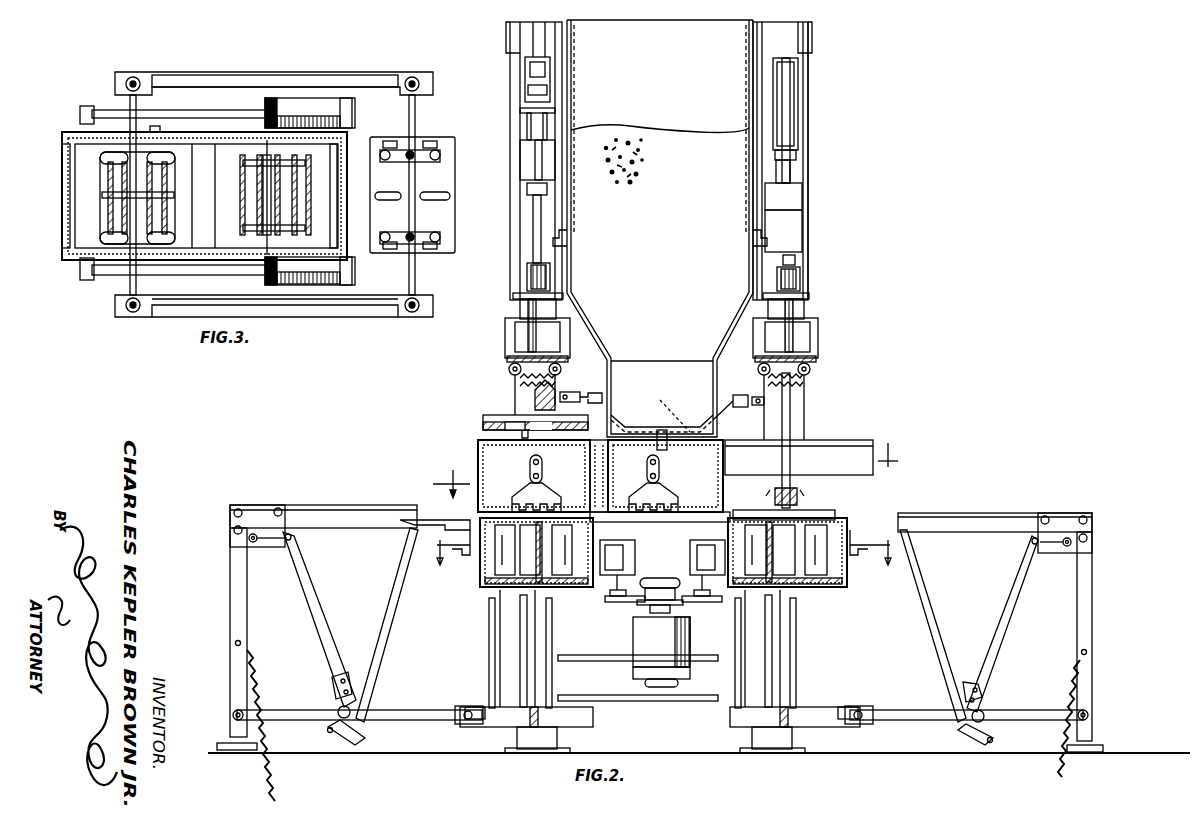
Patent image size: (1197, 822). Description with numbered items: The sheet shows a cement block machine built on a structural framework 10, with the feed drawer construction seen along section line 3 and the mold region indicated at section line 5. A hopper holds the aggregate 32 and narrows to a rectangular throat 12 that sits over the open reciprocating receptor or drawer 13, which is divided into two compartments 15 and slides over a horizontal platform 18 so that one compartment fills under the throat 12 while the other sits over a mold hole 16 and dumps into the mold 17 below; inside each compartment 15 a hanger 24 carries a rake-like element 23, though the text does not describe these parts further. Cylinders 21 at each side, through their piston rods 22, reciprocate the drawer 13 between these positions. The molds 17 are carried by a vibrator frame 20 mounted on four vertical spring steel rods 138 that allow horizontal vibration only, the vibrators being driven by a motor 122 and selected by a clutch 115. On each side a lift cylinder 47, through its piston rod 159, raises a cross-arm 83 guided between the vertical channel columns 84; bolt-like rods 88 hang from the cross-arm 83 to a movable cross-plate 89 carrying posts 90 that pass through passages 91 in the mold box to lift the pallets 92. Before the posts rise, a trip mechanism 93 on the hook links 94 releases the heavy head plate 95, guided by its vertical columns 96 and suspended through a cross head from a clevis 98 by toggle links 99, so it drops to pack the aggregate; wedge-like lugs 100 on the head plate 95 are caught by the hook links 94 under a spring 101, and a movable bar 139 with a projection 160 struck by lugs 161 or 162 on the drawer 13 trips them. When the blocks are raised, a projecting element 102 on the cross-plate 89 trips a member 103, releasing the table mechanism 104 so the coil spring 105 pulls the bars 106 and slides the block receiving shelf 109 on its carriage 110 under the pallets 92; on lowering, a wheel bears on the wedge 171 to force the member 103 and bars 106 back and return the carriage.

In FIG. 2, the section line 3- 3 is at (663, 461).
In FIG. 2, the section line 5- 5 is at (652, 584).
In FIG. 3, the framework 10 is at (152, 72).
In FIG. 2, the framework 10 is at (520, 152).
In FIG. 2, the rectangular throat 12 is at (590, 402).
In FIG. 3, the receptor or drawer 13 is at (256, 140).
In FIG. 3, the compartments 15 is at (118, 140).
In FIG. 2, the compartments 15 is at (600, 476).
In FIG. 2, the mold hole 16 is at (452, 520).
In FIG. 3, the mold 17 is at (110, 245).
In FIG. 2, the mold 17 is at (490, 565).
In FIG. 2, the platform 18 is at (836, 517).
In FIG. 2, the vibrator frame 20 is at (664, 550).
In FIG. 3, the cylinders 21 is at (352, 108).
In FIG. 3, the piston rods 22 is at (222, 115).
In FIG. 2, the rake 23 is at (522, 492).
In FIG. 2, the hanger 24 is at (530, 463).
In FIG. 2, the aggregate 32 is at (629, 195).
In FIG. 2, the lift cylinders 47 is at (536, 305).
In FIG. 2, the cross-arm 83 is at (527, 192).
In FIG. 2, the vertical channel columns 84 is at (834, 97).
In FIG. 3, the rods 88 is at (418, 92).
In FIG. 2, the cross-plate 89 is at (590, 713).
In FIG. 2, the posts 90 is at (489, 668).
In FIG. 2, the passages 91 is at (490, 590).
In FIG. 2, the pallets 92 is at (612, 596).
In FIG. 2, the trip mechanism 93 is at (740, 395).
In FIG. 2, the hook links 94 is at (520, 380).
In FIG. 3, the head plate 95 is at (456, 178).
In FIG. 2, the head plate 95 is at (480, 423).
In FIG. 3, the vertical columns 96 is at (415, 242).
In FIG. 2, the vertical columns 96 is at (790, 420).
In FIG. 2, the clevis 98 is at (526, 44).
In FIG. 2, the toggle links 99 is at (528, 76).
In FIG. 2, the lugs 100 is at (535, 392).
In FIG. 2, the spring 101 is at (509, 364).
In FIG. 2, the projecting element 102 is at (410, 708).
In FIG. 2, the member 103 is at (312, 568).
In FIG. 2, the table mechanism 104 is at (248, 523).
In FIG. 2, the coil spring 105 is at (248, 650).
In FIG. 2, the bars 106 is at (273, 540).
In FIG. 2, the block receiving shelf 109 is at (370, 505).
In FIG. 2, the carriage 110 is at (232, 538).
In FIG. 2, the clutch 115 is at (648, 605).
In FIG. 2, the motor 122 is at (645, 660).
In FIG. 2, the spring steel rods 138 is at (535, 700).
In FIG. 2, the movable bar 139 is at (680, 412).
In FIG. 2, the piston rods 159 is at (533, 243).
In FIG. 2, the projection 160 is at (686, 414).
In FIG. 3, the lug 161 is at (180, 104).
In FIG. 2, the lug 161 is at (520, 438).
In FIG. 2, the lug 162 is at (667, 447).
In FIG. 2, the wedge 171 is at (352, 677).